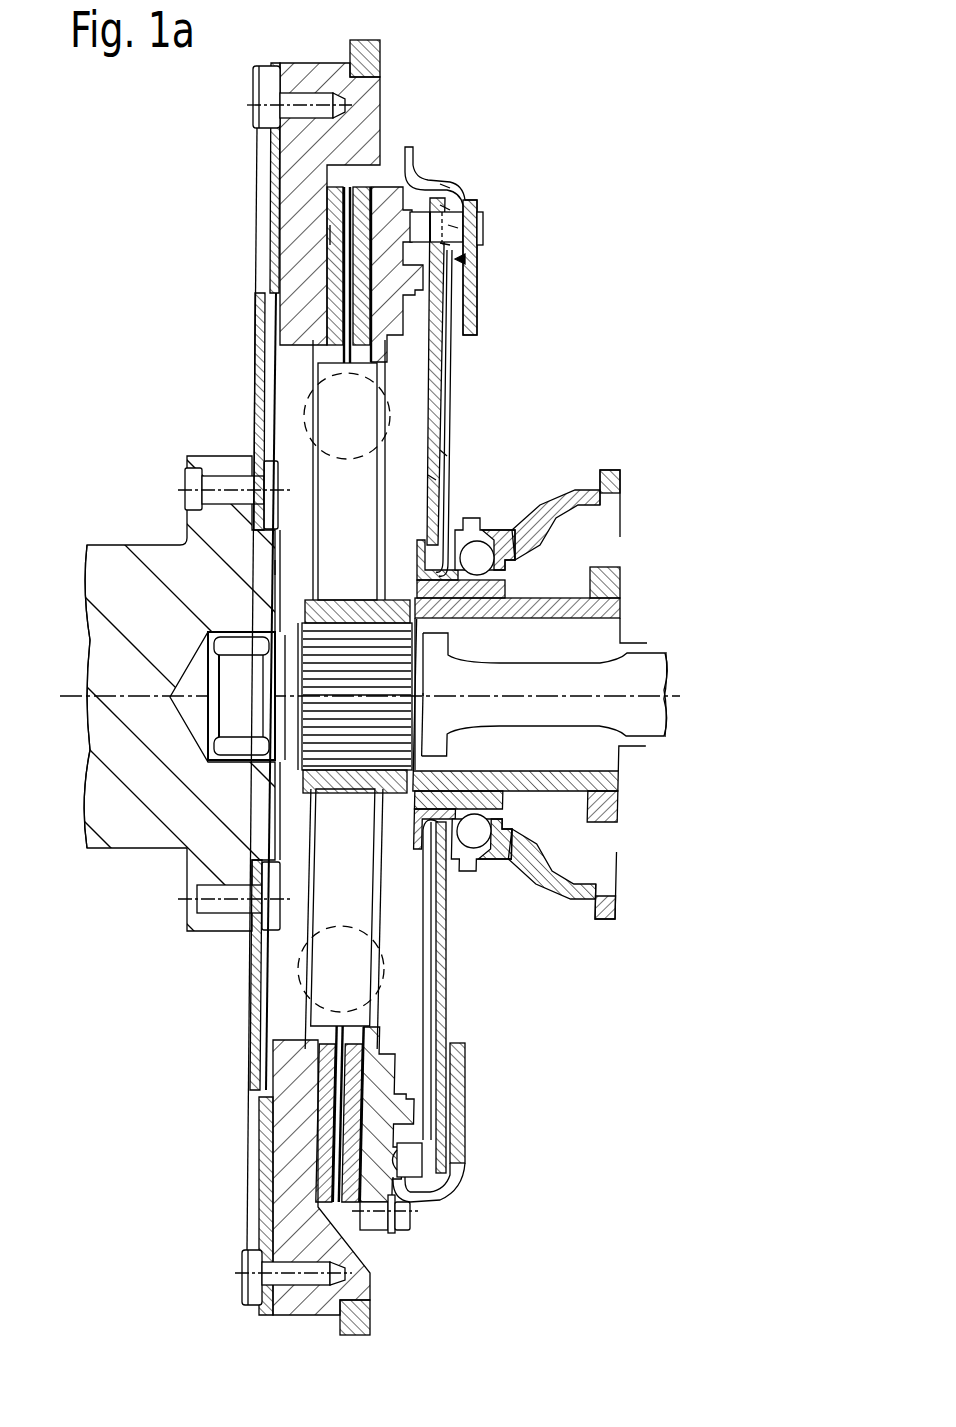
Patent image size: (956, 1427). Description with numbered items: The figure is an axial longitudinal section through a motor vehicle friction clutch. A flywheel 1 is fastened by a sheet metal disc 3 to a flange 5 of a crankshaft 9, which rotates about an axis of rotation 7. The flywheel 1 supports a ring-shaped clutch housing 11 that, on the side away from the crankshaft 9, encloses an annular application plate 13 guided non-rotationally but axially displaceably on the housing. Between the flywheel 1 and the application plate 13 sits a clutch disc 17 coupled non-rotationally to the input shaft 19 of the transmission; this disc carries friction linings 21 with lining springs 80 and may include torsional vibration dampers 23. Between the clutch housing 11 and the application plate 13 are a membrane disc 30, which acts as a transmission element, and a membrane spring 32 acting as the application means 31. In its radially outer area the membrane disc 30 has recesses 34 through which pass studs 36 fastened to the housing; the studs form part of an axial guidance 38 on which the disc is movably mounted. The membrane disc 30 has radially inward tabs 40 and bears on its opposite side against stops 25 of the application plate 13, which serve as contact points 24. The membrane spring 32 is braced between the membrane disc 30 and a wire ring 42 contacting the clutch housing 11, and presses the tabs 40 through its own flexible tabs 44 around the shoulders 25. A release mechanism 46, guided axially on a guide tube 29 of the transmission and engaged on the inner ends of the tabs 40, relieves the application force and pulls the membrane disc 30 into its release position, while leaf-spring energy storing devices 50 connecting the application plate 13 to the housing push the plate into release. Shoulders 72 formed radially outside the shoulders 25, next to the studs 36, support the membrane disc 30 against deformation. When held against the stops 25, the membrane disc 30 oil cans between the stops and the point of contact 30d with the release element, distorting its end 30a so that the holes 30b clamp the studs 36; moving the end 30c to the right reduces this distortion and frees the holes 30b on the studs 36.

The flywheel 1 is at (300, 75).
The sheet metal disc 3 is at (252, 323).
The flange 5 is at (222, 460).
The axis of rotation 7 is at (80, 690).
The crankshaft 9 is at (180, 553).
The clutch housing 11 is at (418, 170).
The application plate 13 is at (432, 328).
The clutch disc 17 is at (347, 348).
The input shaft 19 is at (653, 670).
The friction linings 21 is at (335, 240).
The torsional vibration dampers 23 is at (392, 405).
The contact points 24 is at (447, 292).
The stops 25 is at (400, 270).
The guide tube 29 is at (432, 438).
The membrane disc 30 is at (430, 478).
The end of the membrane disc 30a is at (442, 195).
The holes 30b is at (450, 243).
The end of the membrane disc 30c is at (496, 558).
The point of contact 30d is at (300, 566).
The application means 31 is at (459, 506).
The membrane spring 32 is at (443, 455).
The recesses 34 is at (445, 212).
The studs 36 is at (455, 228).
The axial guidance 38 is at (486, 229).
The tabs 40 is at (425, 950).
The wire ring 42 is at (465, 259).
The flexible tabs 44 is at (447, 1022).
The release mechanism 46 is at (633, 503).
The energy storing devices 50 is at (387, 1222).
The shoulders 72 is at (410, 1158).
The lining springs 80 is at (340, 240).